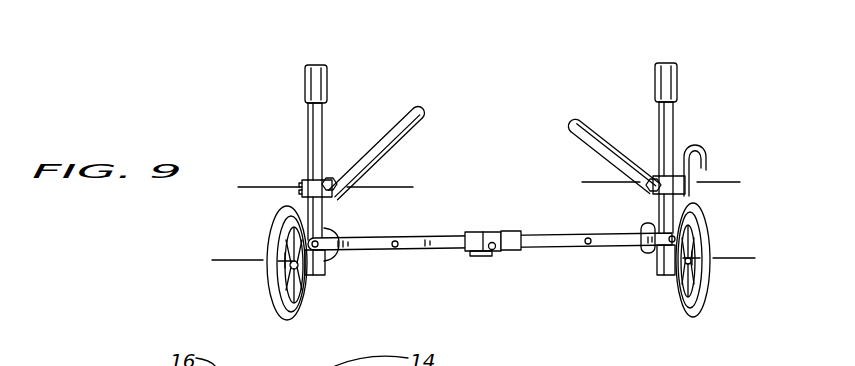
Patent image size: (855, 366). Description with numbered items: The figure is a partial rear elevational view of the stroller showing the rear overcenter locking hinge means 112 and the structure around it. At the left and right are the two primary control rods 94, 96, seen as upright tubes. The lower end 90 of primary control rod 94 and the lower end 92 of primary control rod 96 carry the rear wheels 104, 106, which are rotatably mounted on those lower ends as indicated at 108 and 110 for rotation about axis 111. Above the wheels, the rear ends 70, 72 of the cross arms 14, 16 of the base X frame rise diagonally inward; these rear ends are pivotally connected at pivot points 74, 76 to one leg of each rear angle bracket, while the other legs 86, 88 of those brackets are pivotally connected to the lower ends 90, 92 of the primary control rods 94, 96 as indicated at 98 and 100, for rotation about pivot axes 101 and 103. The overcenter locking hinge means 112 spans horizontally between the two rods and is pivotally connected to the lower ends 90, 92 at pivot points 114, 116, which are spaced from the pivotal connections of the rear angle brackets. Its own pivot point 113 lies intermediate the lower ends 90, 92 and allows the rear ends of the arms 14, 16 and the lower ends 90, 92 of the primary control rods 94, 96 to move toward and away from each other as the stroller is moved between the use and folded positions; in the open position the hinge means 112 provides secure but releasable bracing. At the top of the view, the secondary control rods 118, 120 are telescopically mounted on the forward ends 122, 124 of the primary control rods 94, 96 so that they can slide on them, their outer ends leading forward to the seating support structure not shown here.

The cross arm 14 is at (397, 117).
The cross arm 16 is at (588, 118).
The rear end of arm 70 is at (360, 164).
The rear end of arm 72 is at (628, 158).
The pivot point 74 is at (336, 198).
The pivot point 76 is at (644, 192).
The leg of rear angle bracket 86 is at (302, 184).
The leg of rear angle bracket 88 is at (705, 162).
The lower end of primary control rod 90 is at (312, 275).
The lower end of primary control rod 92 is at (670, 275).
The primary control rod 94 is at (302, 162).
The primary control rod 96 is at (686, 145).
The pivotal connection 98 is at (292, 196).
The pivotal connection 100 is at (684, 190).
The pivot axis 101 is at (380, 186).
The pivot axis 103 is at (600, 182).
The rear wheel 104 is at (275, 275).
The rear wheel 106 is at (705, 308).
The wheel mounting 108 is at (334, 256).
The wheel mounting 110 is at (650, 255).
The wheel rotation axis 111 is at (722, 261).
The overcenter locking hinge means 112 is at (540, 253).
The pivot point of locking hinge means 113 is at (492, 242).
The pivot point 114 is at (325, 277).
The pivot point 116 is at (663, 266).
The secondary control rod 118 is at (310, 87).
The secondary control rod 120 is at (675, 87).
The front end of primary control rod 122 is at (308, 127).
The front end of primary control rod 124 is at (675, 120).